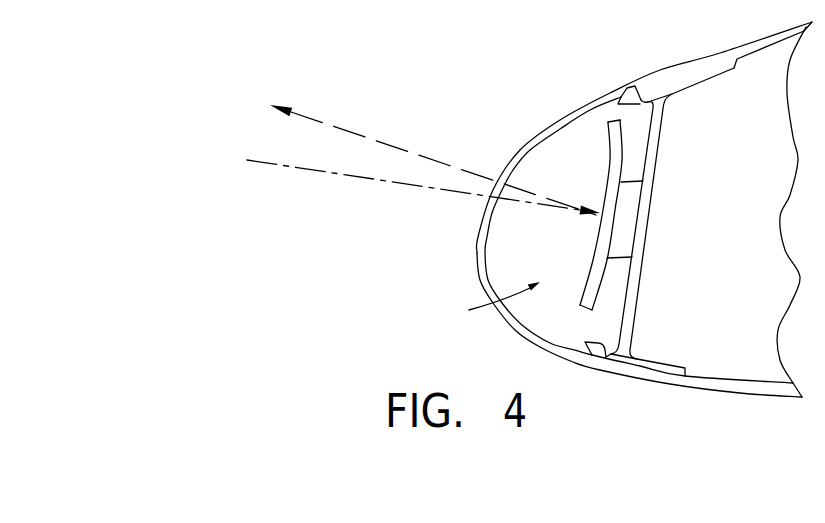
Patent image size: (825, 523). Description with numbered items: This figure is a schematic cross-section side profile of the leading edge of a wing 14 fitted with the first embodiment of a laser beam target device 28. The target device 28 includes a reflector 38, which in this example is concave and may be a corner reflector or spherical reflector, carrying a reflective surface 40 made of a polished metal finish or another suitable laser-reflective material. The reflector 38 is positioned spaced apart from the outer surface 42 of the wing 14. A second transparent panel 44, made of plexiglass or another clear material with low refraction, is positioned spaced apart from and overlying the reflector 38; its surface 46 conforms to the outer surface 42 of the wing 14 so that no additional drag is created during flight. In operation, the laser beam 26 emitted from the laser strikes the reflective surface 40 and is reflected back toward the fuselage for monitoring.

The wing 14 is at (609, 219).
The laser beam 26 is at (307, 115).
The laser beam target device 28 is at (488, 302).
The reflector 38 is at (596, 273).
The reflective surface 40 is at (594, 248).
The outer surface 42 is at (601, 372).
The second transparent panel 44 is at (483, 247).
The surface 46 is at (515, 330).